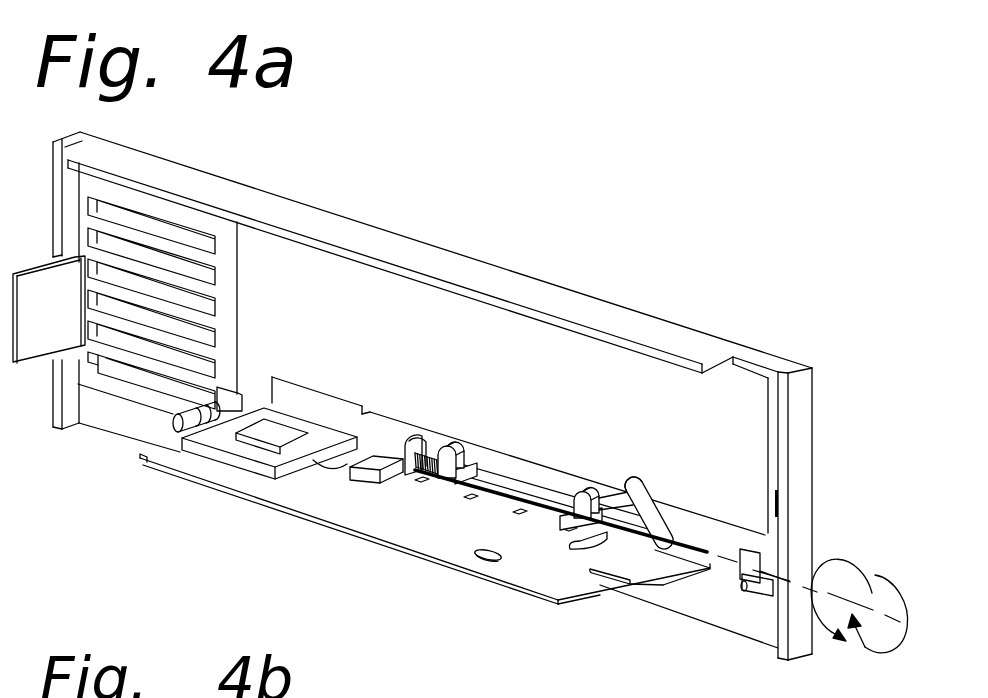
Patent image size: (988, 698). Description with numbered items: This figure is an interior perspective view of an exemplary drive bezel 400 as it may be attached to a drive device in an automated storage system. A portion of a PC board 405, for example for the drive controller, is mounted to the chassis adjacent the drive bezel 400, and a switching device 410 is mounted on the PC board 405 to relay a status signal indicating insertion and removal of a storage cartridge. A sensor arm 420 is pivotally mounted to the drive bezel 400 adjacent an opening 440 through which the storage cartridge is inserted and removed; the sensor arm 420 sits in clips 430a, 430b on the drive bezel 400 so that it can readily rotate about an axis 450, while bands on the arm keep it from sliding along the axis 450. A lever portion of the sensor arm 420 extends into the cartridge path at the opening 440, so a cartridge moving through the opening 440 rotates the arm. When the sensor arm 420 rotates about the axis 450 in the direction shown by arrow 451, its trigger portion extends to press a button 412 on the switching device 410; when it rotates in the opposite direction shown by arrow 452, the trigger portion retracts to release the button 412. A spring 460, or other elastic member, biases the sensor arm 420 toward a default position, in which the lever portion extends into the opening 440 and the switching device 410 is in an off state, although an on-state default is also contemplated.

The drive bezel 400 is at (319, 210).
The PC board 405 is at (343, 528).
The switching device 410 is at (369, 483).
The button 412 is at (398, 458).
The sensor arm 420 is at (513, 498).
The clip 430a is at (451, 447).
The clip 430b is at (592, 490).
The opening 440 is at (518, 422).
The axis 450 is at (706, 552).
The arrow 451 is at (848, 563).
The arrow 452 is at (873, 649).
The spring 460 is at (430, 452).